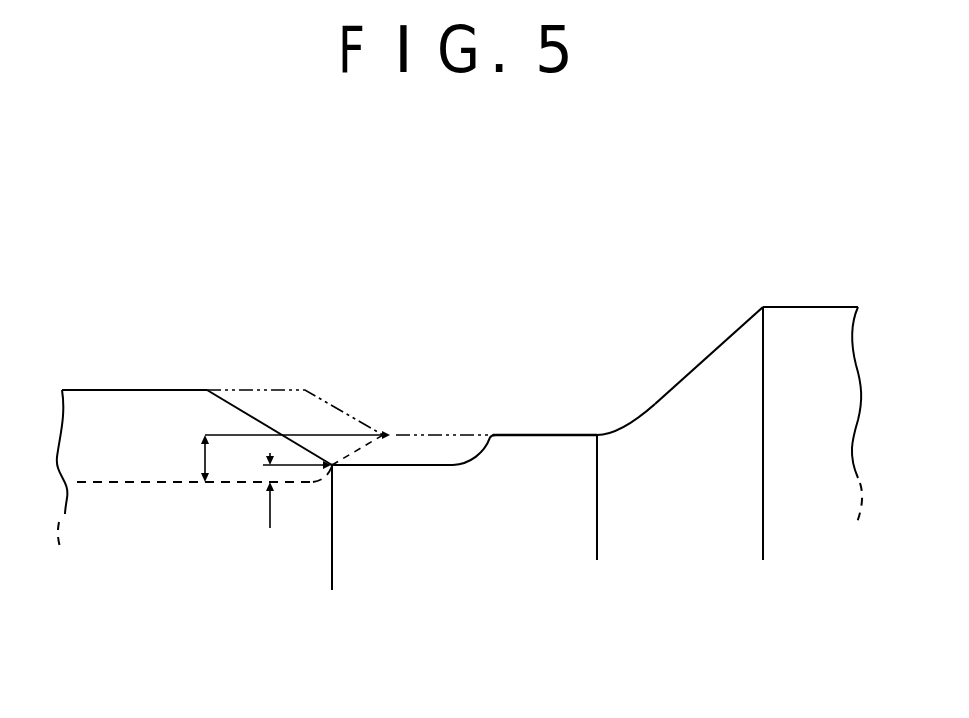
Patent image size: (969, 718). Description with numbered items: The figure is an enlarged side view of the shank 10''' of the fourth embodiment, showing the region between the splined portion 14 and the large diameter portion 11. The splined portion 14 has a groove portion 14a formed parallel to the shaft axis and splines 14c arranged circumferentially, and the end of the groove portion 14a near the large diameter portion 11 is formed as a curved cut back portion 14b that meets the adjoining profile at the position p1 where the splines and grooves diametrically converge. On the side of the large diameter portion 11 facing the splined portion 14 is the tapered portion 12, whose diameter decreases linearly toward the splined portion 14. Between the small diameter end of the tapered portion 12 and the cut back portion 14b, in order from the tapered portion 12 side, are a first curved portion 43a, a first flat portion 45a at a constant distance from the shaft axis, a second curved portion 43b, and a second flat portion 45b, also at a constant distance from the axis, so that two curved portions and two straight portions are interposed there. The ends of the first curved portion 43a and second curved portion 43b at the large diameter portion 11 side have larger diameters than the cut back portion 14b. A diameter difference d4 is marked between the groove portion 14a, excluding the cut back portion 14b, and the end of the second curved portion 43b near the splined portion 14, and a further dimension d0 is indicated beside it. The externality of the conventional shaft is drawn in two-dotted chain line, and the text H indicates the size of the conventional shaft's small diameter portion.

The shank 10''' is at (599, 267).
The large diameter portion 11 is at (825, 307).
The tapered portion 12 is at (760, 302).
The splined portion 14 is at (93, 390).
The groove portion 14a is at (105, 480).
The cut back portion 14b is at (333, 460).
The splines 14c is at (155, 390).
The first curved portion 43a is at (660, 392).
The second curved portion 43b is at (497, 440).
The first flat portion 45a is at (597, 433).
The second flat portion 45b is at (452, 470).
The position P1 p1 is at (332, 465).
The size of the small diameter portion of the conventional shaft H is at (438, 435).
The depth dimension d0 is at (188, 458).
The diameter difference d4 is at (282, 490).